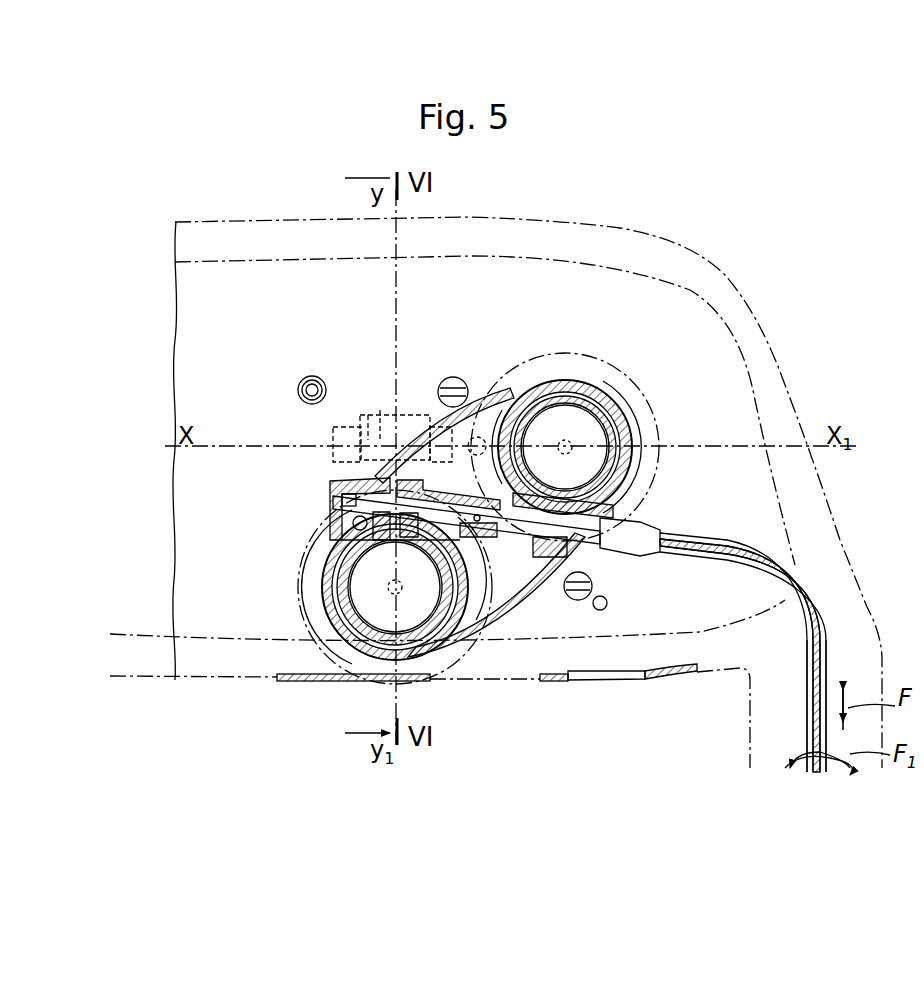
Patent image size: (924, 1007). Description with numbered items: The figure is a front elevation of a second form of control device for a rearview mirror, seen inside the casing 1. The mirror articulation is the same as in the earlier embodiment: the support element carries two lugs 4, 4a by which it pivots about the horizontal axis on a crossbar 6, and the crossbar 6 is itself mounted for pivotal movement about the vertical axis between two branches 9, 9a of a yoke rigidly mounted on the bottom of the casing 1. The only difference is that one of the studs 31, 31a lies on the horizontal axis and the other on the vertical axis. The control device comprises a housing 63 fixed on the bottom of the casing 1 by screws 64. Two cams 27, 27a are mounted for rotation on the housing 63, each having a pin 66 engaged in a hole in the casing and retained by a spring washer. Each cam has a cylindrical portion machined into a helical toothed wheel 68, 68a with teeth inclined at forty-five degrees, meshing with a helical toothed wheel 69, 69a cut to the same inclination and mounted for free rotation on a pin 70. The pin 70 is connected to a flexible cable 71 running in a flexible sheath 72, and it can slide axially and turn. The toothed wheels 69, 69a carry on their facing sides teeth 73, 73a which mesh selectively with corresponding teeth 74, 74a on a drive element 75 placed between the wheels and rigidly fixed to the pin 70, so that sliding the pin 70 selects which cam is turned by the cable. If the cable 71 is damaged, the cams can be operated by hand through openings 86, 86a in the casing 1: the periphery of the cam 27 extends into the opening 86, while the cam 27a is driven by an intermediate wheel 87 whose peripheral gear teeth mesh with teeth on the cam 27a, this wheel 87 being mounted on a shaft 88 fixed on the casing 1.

The casing 1 is at (513, 225).
The lug 4 is at (440, 426).
The lug 4a is at (333, 440).
The crossbar 6 is at (368, 414).
The yoke branch 9 is at (380, 412).
The yoke branch 9a is at (330, 481).
The cam 27 is at (316, 650).
The cam 27a is at (640, 397).
The stud 31 is at (395, 587).
The stud 31a is at (479, 400).
The housing 63 is at (540, 612).
The screw 64 is at (448, 377).
The pin 66 is at (326, 600).
The helical toothed wheel 68 is at (380, 640).
The helical toothed wheel 68a is at (590, 410).
The helical toothed wheel 69 is at (320, 550).
The helical toothed wheel 69a is at (642, 498).
The pin 70 is at (345, 522).
The flexible cable 71 is at (812, 592).
The flexible sheath 72 is at (827, 640).
The teeth 73 is at (505, 493).
The teeth 73a is at (565, 447).
The teeth 74 is at (395, 587).
The teeth 74a is at (486, 560).
The drive element 75 is at (480, 538).
The opening 86 is at (432, 682).
The opening 86a is at (575, 682).
The intermediate wheel 87 is at (660, 660).
The shaft 88 is at (606, 609).